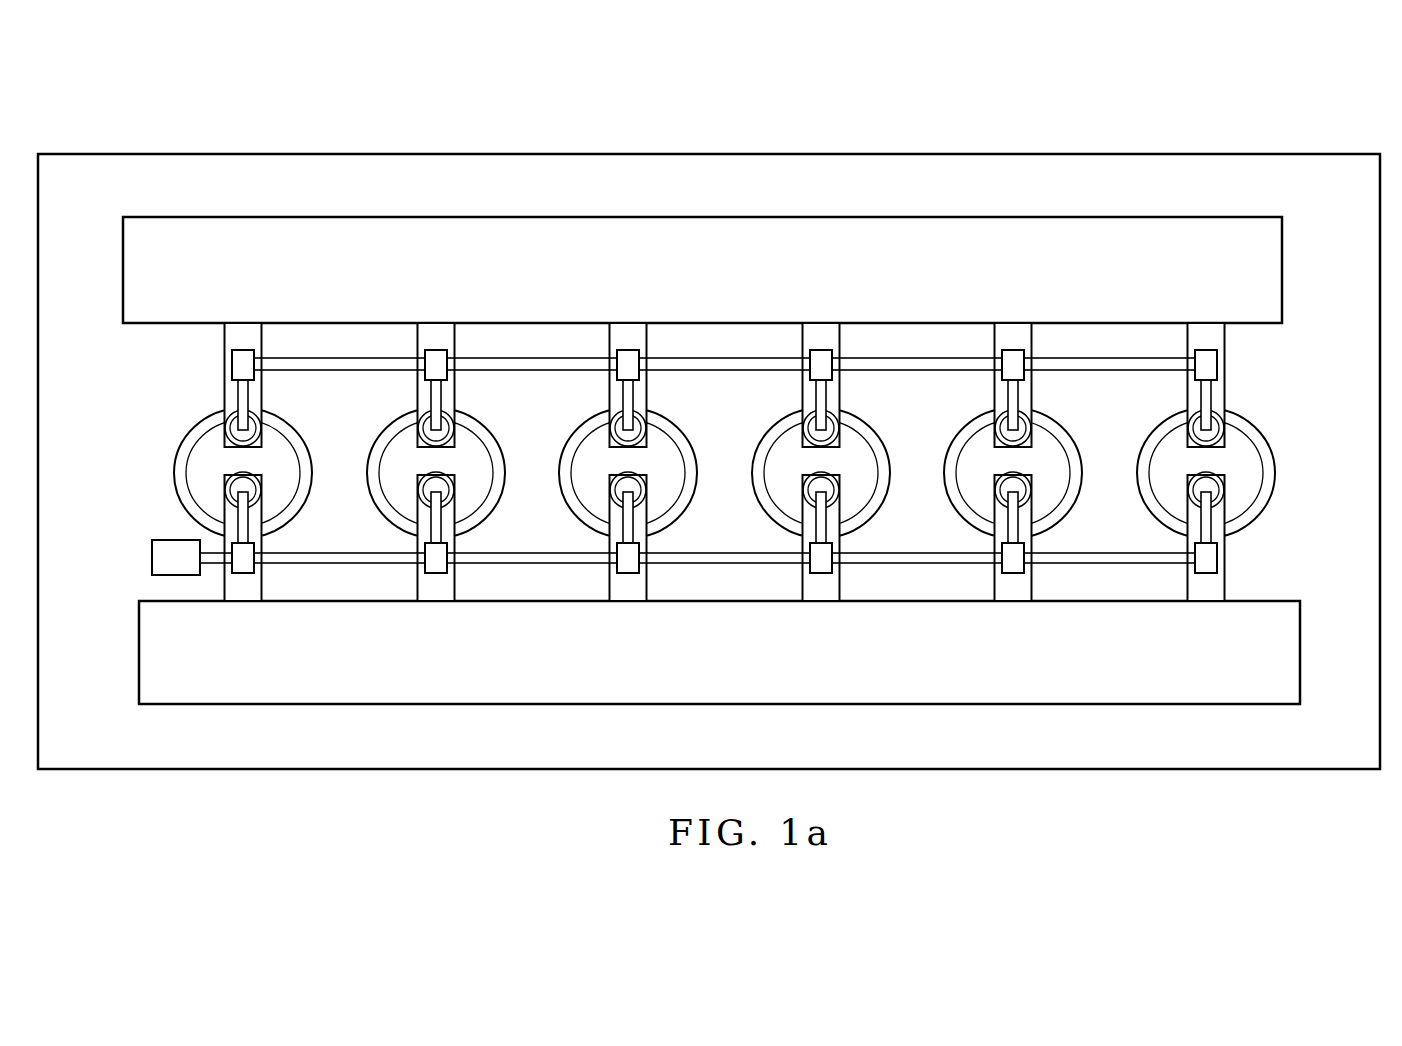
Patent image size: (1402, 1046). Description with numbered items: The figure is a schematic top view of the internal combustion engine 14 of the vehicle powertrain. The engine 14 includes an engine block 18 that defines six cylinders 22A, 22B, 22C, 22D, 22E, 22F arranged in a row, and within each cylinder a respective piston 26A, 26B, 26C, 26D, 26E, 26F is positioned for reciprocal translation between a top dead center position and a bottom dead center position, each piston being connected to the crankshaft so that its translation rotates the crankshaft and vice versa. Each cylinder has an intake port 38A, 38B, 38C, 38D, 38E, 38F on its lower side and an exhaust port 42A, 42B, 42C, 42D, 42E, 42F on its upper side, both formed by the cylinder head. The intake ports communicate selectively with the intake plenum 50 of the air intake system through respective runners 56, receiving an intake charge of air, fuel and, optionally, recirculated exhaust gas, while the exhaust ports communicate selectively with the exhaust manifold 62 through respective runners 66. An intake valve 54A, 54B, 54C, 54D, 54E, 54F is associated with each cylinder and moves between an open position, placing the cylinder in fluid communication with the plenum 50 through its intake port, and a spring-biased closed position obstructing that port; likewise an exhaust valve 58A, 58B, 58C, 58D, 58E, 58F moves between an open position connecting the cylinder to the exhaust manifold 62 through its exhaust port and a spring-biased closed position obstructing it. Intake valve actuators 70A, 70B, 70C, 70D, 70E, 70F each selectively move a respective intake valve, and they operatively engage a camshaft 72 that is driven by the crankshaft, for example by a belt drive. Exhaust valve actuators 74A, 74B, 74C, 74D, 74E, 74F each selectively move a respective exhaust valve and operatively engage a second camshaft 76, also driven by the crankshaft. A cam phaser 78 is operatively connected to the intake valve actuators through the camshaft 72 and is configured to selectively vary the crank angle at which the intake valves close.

The internal combustion engine 14 is at (193, 97).
The engine block 18 is at (533, 163).
The exhaust manifold 62 is at (770, 232).
The intake plenum 50 is at (694, 692).
The cam phaser 78 is at (152, 560).
The runner 66 is at (259, 338).
The camshaft 76 is at (560, 368).
The runner 56 is at (257, 583).
The camshaft 72 is at (748, 563).
The cylinder 22A is at (181, 459).
The cylinder 22B is at (374, 459).
The cylinder 22C is at (566, 459).
The cylinder 22D is at (759, 459).
The cylinder 22E is at (951, 459).
The cylinder 22F is at (1144, 459).
The piston 26A is at (195, 466).
The piston 26B is at (388, 466).
The piston 26C is at (580, 466).
The piston 26D is at (773, 466).
The piston 26E is at (965, 466).
The piston 26F is at (1158, 466).
The exhaust valve 58A is at (227, 414).
The exhaust valve 58B is at (420, 414).
The exhaust valve 58C is at (612, 414).
The exhaust valve 58D is at (805, 414).
The exhaust valve 58E is at (997, 414).
The exhaust valve 58F is at (1190, 414).
The exhaust port 42A is at (235, 434).
The exhaust port 42B is at (428, 434).
The exhaust port 42C is at (620, 434).
The exhaust port 42D is at (813, 434).
The exhaust port 42E is at (1005, 434).
The exhaust port 42F is at (1198, 434).
The intake port 38A is at (231, 490).
The intake port 38B is at (424, 490).
The intake port 38C is at (616, 490).
The intake port 38D is at (809, 490).
The intake port 38E is at (1001, 490).
The intake port 38F is at (1194, 490).
The intake valve 54A is at (225, 506).
The intake valve 54B is at (418, 506).
The intake valve 54C is at (610, 506).
The intake valve 54D is at (803, 506).
The intake valve 54E is at (995, 506).
The intake valve 54F is at (1188, 506).
The exhaust valve actuator 74A is at (242, 350).
The exhaust valve actuator 74B is at (435, 350).
The exhaust valve actuator 74C is at (627, 350).
The exhaust valve actuator 74D is at (820, 350).
The exhaust valve actuator 74E is at (1012, 350).
The exhaust valve actuator 74F is at (1205, 350).
The intake valve actuator 70A is at (243, 575).
The intake valve actuator 70B is at (436, 575).
The intake valve actuator 70C is at (628, 575).
The intake valve actuator 70D is at (821, 575).
The intake valve actuator 70E is at (1013, 575).
The intake valve actuator 70F is at (1206, 575).